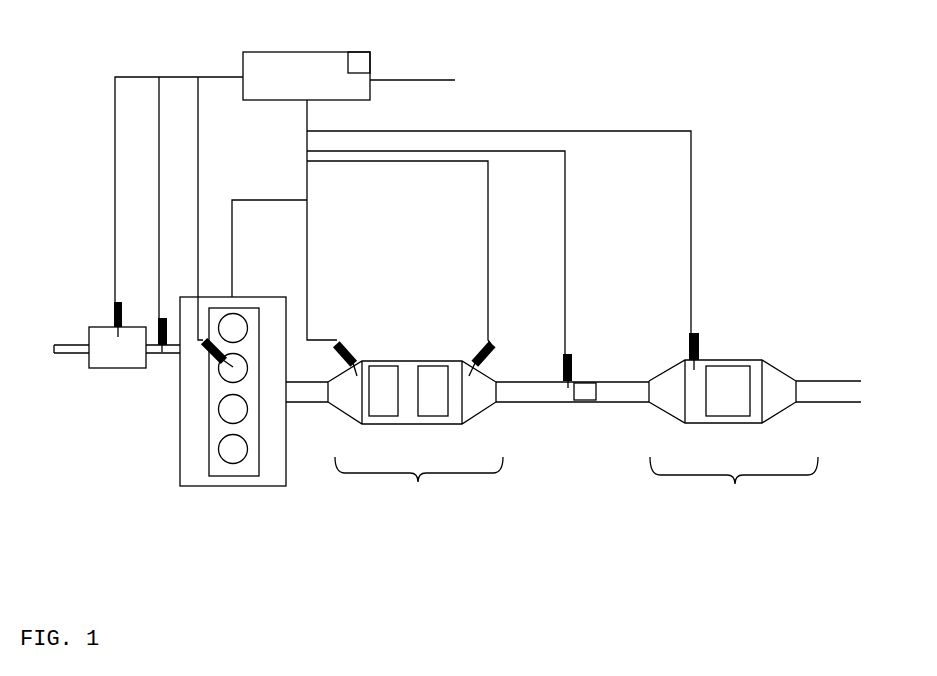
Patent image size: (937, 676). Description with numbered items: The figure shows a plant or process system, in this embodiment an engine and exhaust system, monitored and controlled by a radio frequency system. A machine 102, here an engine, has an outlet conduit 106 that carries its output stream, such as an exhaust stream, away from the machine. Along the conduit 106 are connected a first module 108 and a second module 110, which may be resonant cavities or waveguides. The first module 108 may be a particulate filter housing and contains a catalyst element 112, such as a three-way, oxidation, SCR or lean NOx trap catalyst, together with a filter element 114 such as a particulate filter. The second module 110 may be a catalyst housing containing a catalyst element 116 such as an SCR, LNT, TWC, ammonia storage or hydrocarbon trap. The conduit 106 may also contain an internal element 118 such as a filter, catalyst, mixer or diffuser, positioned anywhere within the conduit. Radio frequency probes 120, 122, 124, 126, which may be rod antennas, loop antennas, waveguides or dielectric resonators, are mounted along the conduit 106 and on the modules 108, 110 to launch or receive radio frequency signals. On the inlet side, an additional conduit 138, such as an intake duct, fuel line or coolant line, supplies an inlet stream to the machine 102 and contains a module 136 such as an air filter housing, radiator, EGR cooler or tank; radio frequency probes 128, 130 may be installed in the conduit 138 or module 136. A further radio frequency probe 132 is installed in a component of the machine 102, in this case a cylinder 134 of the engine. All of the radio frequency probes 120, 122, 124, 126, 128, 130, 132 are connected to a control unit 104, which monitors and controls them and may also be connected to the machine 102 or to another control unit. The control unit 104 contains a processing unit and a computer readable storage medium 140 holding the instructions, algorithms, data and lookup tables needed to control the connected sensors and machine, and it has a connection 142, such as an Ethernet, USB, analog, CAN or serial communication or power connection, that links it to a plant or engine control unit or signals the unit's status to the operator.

The machine 102 is at (237, 490).
The control unit 104 is at (325, 43).
The conduit 106 is at (312, 408).
The first module 108 is at (415, 445).
The second module 110 is at (733, 441).
The catalyst element 112 is at (383, 396).
The filter element 114 is at (440, 397).
The catalyst element 116 is at (728, 397).
The internal element 118 is at (588, 393).
The radio frequency probe 120 is at (700, 322).
The radio frequency probe 122 is at (559, 345).
The radio frequency probe 124 is at (468, 345).
The radio frequency probe 126 is at (356, 345).
The radio frequency probe 128 is at (108, 312).
The radio frequency probe 130 is at (166, 310).
The radio frequency probe 132 is at (203, 355).
The cylinder 134 is at (222, 382).
The module 136 is at (117, 347).
The conduit 138 is at (167, 362).
The computer readable storage medium 140 is at (357, 65).
The connection 142 is at (412, 92).